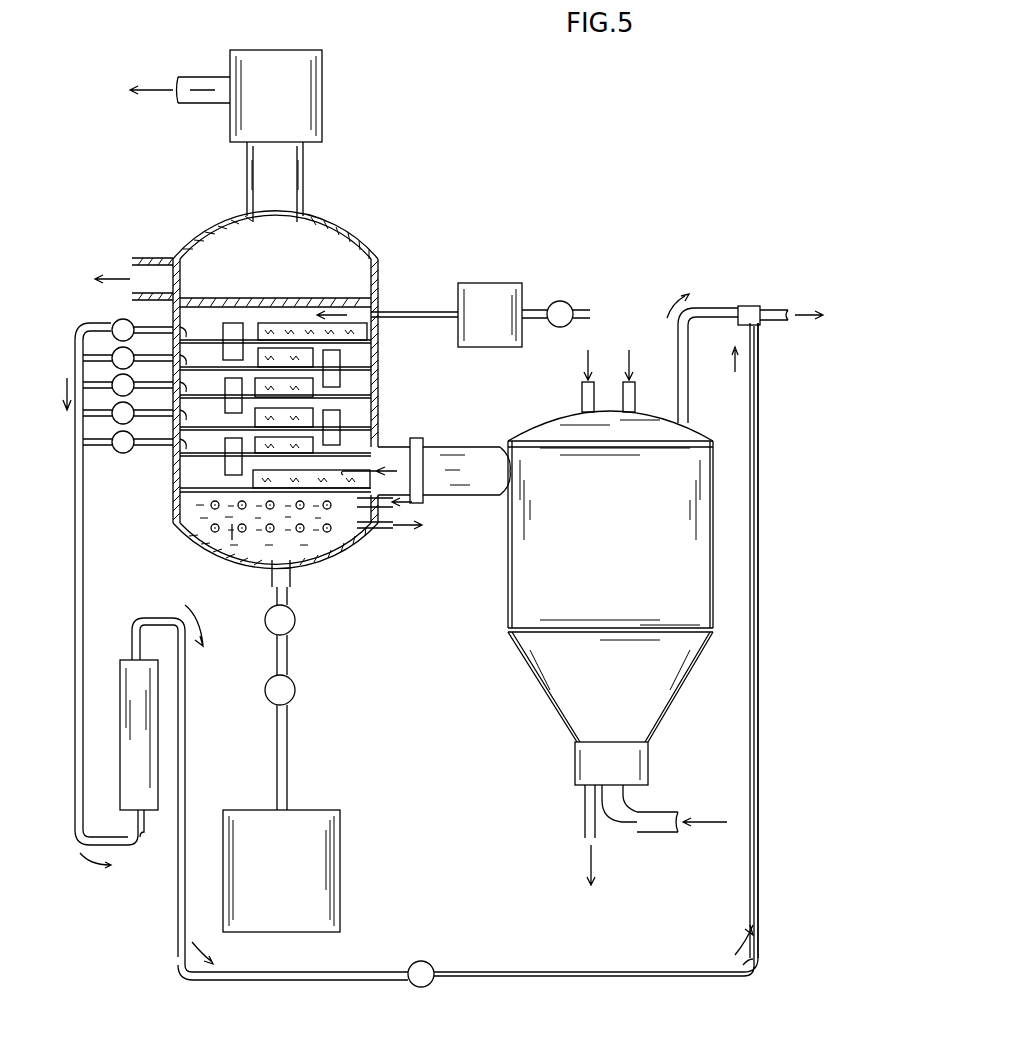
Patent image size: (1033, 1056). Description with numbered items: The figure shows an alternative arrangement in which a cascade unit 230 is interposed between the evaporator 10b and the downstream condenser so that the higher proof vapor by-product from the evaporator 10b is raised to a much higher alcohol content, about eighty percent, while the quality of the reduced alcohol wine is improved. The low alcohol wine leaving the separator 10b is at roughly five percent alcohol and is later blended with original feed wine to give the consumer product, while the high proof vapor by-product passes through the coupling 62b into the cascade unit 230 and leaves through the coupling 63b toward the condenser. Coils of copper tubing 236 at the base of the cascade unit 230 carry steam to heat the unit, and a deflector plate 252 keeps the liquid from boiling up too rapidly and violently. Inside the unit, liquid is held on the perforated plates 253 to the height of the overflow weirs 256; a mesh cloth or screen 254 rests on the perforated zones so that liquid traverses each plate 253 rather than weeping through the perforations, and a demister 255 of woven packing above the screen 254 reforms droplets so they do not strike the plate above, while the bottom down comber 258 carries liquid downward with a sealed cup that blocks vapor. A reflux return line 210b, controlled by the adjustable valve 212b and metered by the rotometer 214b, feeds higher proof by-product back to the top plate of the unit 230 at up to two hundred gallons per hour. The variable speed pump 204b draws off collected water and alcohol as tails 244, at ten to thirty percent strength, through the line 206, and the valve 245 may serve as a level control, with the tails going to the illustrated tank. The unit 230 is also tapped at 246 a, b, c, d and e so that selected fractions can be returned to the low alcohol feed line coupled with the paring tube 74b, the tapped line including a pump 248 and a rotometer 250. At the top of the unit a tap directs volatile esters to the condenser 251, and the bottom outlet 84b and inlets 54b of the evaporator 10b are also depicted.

The condenser 251 is at (295, 103).
The cascade unit 230 is at (399, 227).
The coupling 63b is at (158, 260).
The overflow weir 256 is at (248, 321).
The bottom down comber 258 is at (227, 458).
The demister 255 is at (313, 346).
The plates 253 is at (315, 390).
The mesh cloth or screen 254 is at (301, 454).
The deflector plate 252 is at (265, 490).
The coils of copper tubing 236 is at (330, 530).
The taps 246 is at (83, 529).
The tap a is at (159, 333).
The tap b is at (164, 360).
The tap c is at (164, 387).
The tap d is at (164, 415).
The tap e is at (164, 443).
The rotometer 250 is at (145, 766).
The tails 244 is at (295, 894).
The line 206 is at (288, 661).
The valve 245 is at (295, 620).
The variable speed pump 204b is at (295, 690).
The pump 248 is at (440, 947).
The reflux return line 210b is at (422, 311).
The rotometer 214b is at (490, 315).
The adjustable valve 212b is at (570, 293).
The coupling 62b is at (464, 448).
The inlets 54b is at (623, 398).
The evaporator 10b is at (625, 544).
The outlet 84b is at (585, 808).
The paring tube 74b is at (778, 308).